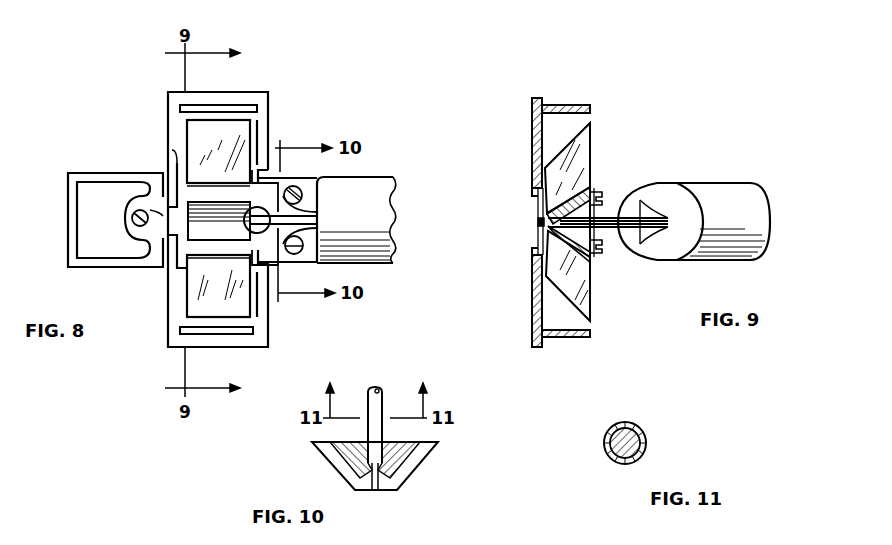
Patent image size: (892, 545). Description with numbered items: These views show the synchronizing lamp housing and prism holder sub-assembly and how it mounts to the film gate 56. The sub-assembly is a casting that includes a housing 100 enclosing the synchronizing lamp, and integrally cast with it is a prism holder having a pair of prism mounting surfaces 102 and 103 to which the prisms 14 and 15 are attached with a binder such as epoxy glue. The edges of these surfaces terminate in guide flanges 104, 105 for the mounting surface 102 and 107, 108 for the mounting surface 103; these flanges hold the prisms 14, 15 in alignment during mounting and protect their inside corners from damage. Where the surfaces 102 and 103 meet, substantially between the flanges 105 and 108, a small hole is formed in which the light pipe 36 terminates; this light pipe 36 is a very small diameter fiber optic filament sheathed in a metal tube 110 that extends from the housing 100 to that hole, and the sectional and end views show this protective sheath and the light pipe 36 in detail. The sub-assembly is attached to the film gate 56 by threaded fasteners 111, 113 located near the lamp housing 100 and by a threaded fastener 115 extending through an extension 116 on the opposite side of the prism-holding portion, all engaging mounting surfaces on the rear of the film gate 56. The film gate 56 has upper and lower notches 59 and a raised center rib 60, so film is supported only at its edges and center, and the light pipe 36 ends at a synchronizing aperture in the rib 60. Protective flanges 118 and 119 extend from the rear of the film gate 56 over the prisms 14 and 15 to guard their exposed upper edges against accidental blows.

In FIG. 8, the prism 14 is at (245, 130).
In FIG. 9, the prism 14 is at (590, 140).
In FIG. 8, the prism 15 is at (190, 297).
In FIG. 9, the prism 15 is at (590, 302).
In FIG. 10, the light pipe 36 is at (377, 490).
In FIG. 11, the light pipe 36 is at (614, 452).
In FIG. 8, the film gate 56 is at (168, 332).
In FIG. 9, the film gate 56 is at (532, 148).
In FIG. 9, the grooves or notches 59 is at (532, 190).
In FIG. 9, the raised center rib 60 is at (536, 222).
In FIG. 8, the housing 100 is at (370, 182).
In FIG. 9, the housing 100 is at (730, 190).
In FIG. 9, the prism mounting surface 102 is at (548, 216).
In FIG. 9, the prism mounting surface 103 is at (552, 232).
In FIG. 8, the guide flange 104 is at (174, 152).
In FIG. 8, the guide flange 105 is at (256, 164).
In FIG. 10, the guide flange 105 is at (332, 457).
In FIG. 8, the guide flange 107 is at (176, 268).
In FIG. 8, the guide flange 108 is at (258, 298).
In FIG. 10, the guide flange 108 is at (415, 463).
In FIG. 8, the metal tube 110 is at (278, 268).
In FIG. 9, the metal tube 110 is at (620, 220).
In FIG. 10, the metal tube 110 is at (380, 392).
In FIG. 11, the metal tube 110 is at (642, 432).
In FIG. 8, the threaded fastener 111 is at (302, 198).
In FIG. 9, the threaded fastener 111 is at (598, 192).
In FIG. 8, the threaded fastener 113 is at (303, 240).
In FIG. 9, the threaded fastener 113 is at (596, 254).
In FIG. 8, the threaded fastener 115 is at (135, 210).
In FIG. 8, the extension 116 is at (163, 175).
In FIG. 8, the protective flange 118 is at (228, 105).
In FIG. 9, the protective flange 118 is at (570, 105).
In FIG. 8, the protective flange 119 is at (237, 335).
In FIG. 9, the protective flange 119 is at (562, 338).